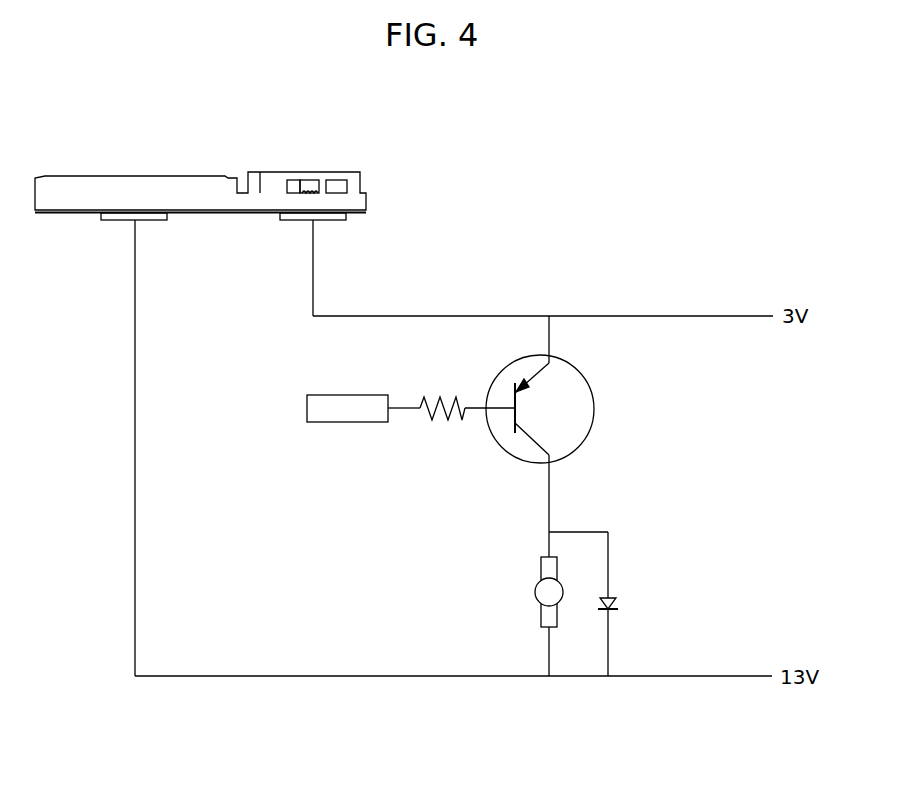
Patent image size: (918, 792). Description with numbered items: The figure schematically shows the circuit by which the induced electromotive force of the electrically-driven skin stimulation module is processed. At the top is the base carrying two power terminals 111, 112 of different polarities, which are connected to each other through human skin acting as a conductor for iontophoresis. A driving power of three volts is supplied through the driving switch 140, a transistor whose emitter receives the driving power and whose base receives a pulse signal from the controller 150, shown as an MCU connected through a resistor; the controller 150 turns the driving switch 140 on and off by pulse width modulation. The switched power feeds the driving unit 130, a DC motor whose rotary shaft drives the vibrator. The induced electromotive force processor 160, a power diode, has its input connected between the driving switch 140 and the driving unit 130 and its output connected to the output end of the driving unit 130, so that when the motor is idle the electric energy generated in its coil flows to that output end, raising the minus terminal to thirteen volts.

The power terminal 111 is at (335, 220).
The power terminal 112 is at (117, 220).
The driving unit 130 is at (538, 615).
The driving switch 140 is at (587, 378).
The controller 150 is at (312, 422).
The induced electromotive force processor 160 is at (620, 603).